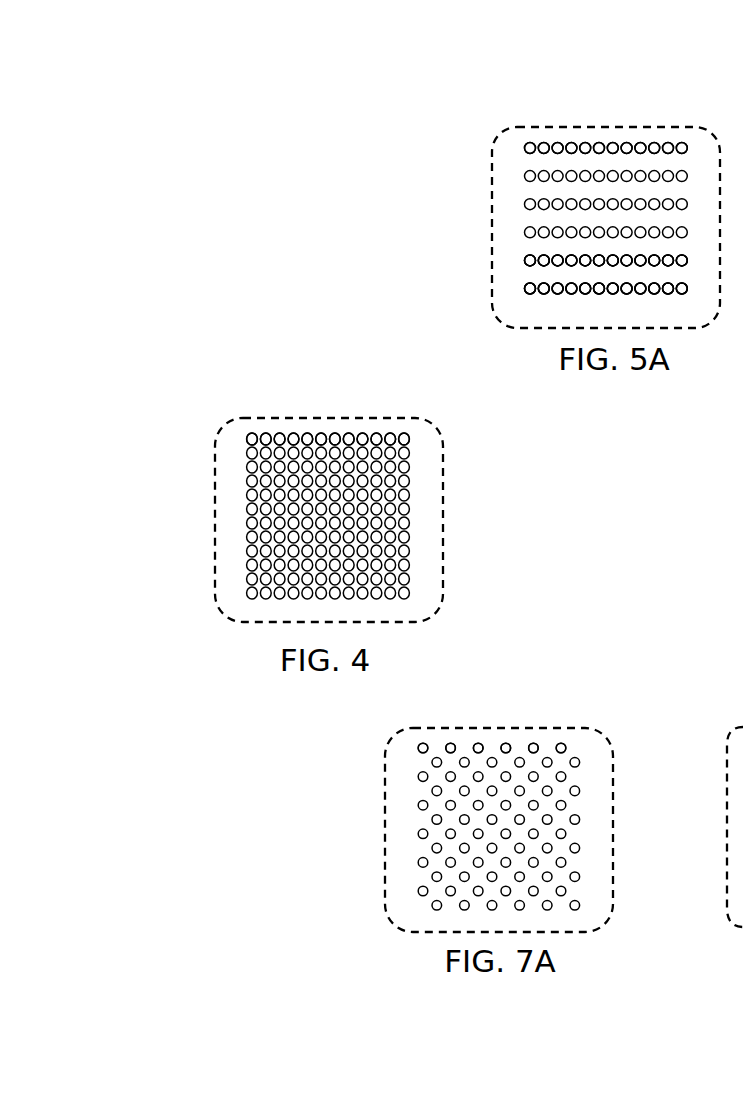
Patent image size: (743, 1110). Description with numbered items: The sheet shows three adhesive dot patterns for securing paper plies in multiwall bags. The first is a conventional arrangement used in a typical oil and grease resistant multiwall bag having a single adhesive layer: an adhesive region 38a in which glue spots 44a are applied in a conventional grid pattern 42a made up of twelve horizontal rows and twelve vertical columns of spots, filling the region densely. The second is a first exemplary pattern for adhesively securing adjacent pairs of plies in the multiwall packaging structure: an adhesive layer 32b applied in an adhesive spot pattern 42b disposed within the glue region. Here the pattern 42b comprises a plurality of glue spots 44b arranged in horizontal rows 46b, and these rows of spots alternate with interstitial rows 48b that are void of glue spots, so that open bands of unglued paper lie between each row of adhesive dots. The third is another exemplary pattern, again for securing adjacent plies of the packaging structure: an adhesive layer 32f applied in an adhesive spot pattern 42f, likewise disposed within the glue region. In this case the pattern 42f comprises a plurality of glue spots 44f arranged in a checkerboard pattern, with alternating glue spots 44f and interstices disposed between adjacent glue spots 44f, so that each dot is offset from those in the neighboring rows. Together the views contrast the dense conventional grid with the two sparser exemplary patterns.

In FIG. 5A, the adhesive layer 32b is at (515, 175).
In FIG. 5A, the adhesive spot pattern 42b is at (509, 244).
In FIG. 5A, the glue spots 44b is at (571, 141).
In FIG. 5A, the horizontal rows 46b is at (523, 261).
In FIG. 5A, the interstitial rows 48b is at (687, 247).
In FIG. 4, the adhesive region 38a is at (208, 522).
In FIG. 4, the grid pattern 42a is at (236, 464).
In FIG. 4, the glue spots 44a is at (308, 434).
In FIG. 7A, the adhesive layer 32f is at (403, 782).
In FIG. 7A, the adhesive spot pattern 42f is at (378, 853).
In FIG. 7A, the glue spots 44f is at (455, 745).